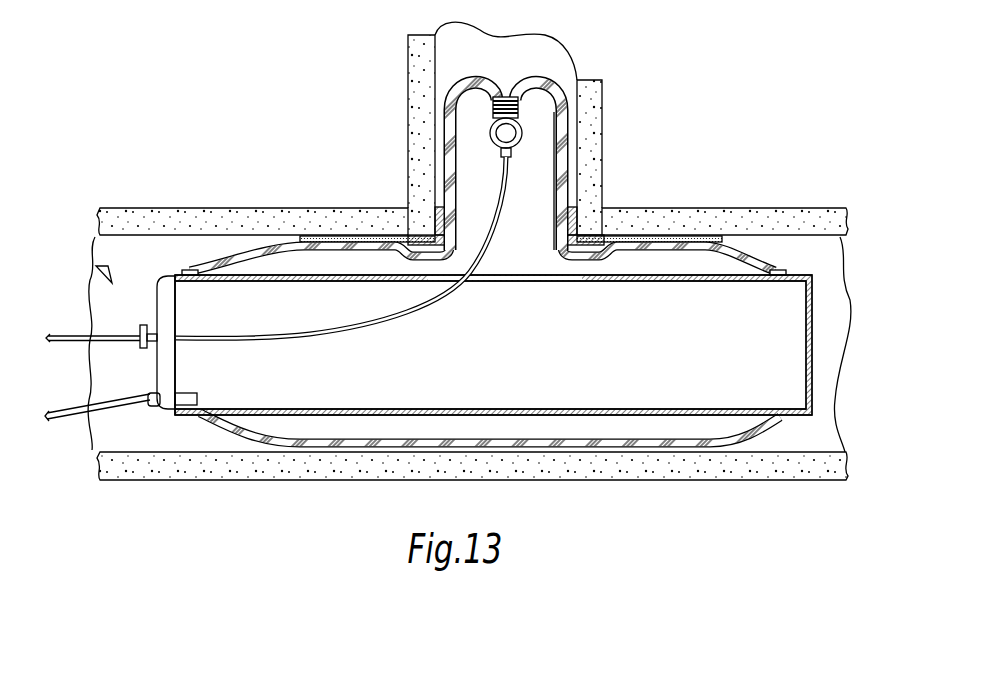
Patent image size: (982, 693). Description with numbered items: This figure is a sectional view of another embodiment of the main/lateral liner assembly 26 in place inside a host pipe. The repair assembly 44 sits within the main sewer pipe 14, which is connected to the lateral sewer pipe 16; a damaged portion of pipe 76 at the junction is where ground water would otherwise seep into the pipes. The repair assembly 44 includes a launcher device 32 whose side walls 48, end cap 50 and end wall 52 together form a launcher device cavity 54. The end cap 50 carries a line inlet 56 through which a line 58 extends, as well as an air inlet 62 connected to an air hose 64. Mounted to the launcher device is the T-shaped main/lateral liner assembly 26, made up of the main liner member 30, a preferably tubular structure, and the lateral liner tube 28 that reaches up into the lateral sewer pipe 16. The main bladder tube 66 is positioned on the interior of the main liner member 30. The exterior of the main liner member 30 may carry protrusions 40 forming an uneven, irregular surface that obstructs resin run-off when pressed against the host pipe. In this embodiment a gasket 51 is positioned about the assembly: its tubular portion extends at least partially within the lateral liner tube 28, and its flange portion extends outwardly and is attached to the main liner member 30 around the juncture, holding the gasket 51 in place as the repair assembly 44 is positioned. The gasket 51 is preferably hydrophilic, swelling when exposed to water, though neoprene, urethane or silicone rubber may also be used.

The main sewer pipe 14 is at (765, 210).
The lateral sewer pipe 16 is at (603, 114).
The main/lateral liner assembly 26 is at (538, 188).
The lateral liner tube 28 is at (497, 97).
The main liner member 30 is at (325, 242).
The launcher device 32 is at (150, 264).
The protrusions 40 is at (443, 146).
The repair assembly 44 is at (100, 270).
The side walls 48 is at (238, 272).
The end cap 50 is at (160, 368).
The gasket 51 is at (570, 229).
The end wall 52 is at (812, 300).
The launcher device cavity 54 is at (778, 368).
The line inlet 56 is at (141, 325).
The line 58 is at (98, 342).
The air inlet 62 is at (152, 406).
The air hose 64 is at (88, 415).
The main bladder tube 66 is at (213, 270).
The damaged portion of pipe 76 is at (410, 208).